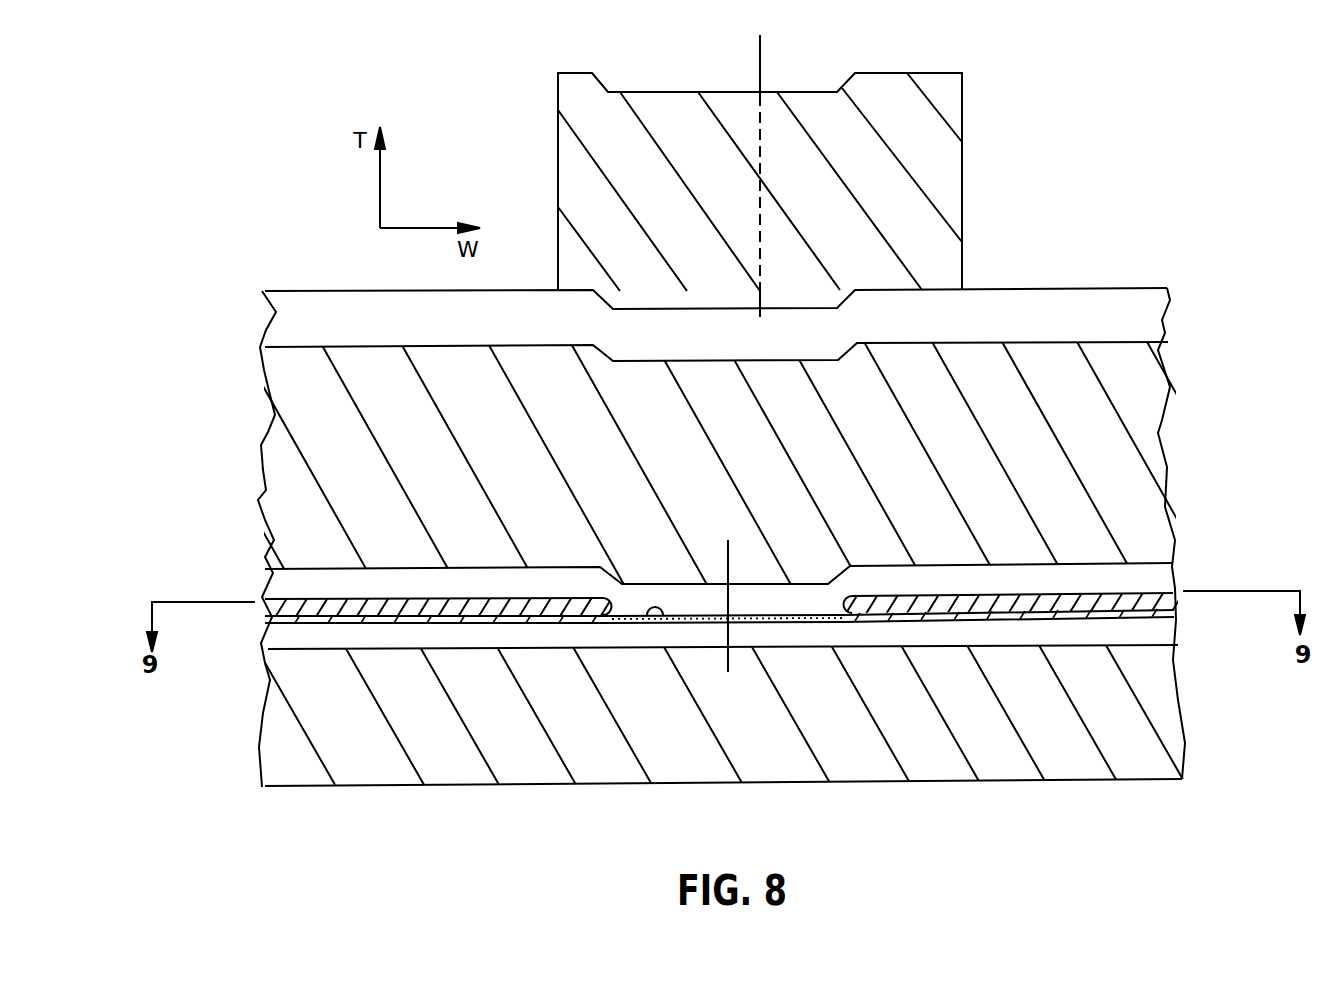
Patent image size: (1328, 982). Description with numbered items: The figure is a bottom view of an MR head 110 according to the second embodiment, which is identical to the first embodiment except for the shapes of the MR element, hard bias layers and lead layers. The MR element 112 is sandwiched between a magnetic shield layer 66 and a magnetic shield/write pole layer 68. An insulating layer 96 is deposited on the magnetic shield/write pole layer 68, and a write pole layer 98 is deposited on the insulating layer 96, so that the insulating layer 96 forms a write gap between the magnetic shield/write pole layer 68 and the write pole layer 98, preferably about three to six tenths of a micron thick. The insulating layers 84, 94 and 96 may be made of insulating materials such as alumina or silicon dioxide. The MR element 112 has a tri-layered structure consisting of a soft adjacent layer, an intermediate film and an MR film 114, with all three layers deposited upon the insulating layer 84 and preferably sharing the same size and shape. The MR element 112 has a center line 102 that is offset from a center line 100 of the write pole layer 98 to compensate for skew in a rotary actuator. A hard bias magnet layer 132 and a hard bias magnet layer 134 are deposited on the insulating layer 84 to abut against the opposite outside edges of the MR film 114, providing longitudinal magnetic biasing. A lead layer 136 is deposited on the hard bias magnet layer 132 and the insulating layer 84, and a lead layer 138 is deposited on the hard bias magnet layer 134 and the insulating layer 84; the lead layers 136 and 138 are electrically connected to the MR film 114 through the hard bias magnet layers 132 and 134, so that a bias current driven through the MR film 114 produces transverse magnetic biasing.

The magnetic shield layer 66 is at (1082, 770).
The magnetic shield/write pole layer 68 is at (1130, 490).
The insulating layer 84 is at (1163, 637).
The insulating layer 94 is at (1158, 573).
The insulating layer 96 is at (1152, 317).
The write pole layer 98 is at (947, 155).
The center line of write pole layer 100 is at (762, 64).
The center line of MR element 102 is at (728, 600).
The MR head 110 is at (1097, 207).
The MR element 112 is at (802, 623).
The MR film 114 is at (650, 623).
The hard bias magnet layer 132 is at (1150, 620).
The hard bias magnet layer 134 is at (290, 634).
The lead layer 136 is at (1173, 600).
The lead layer 138 is at (290, 607).